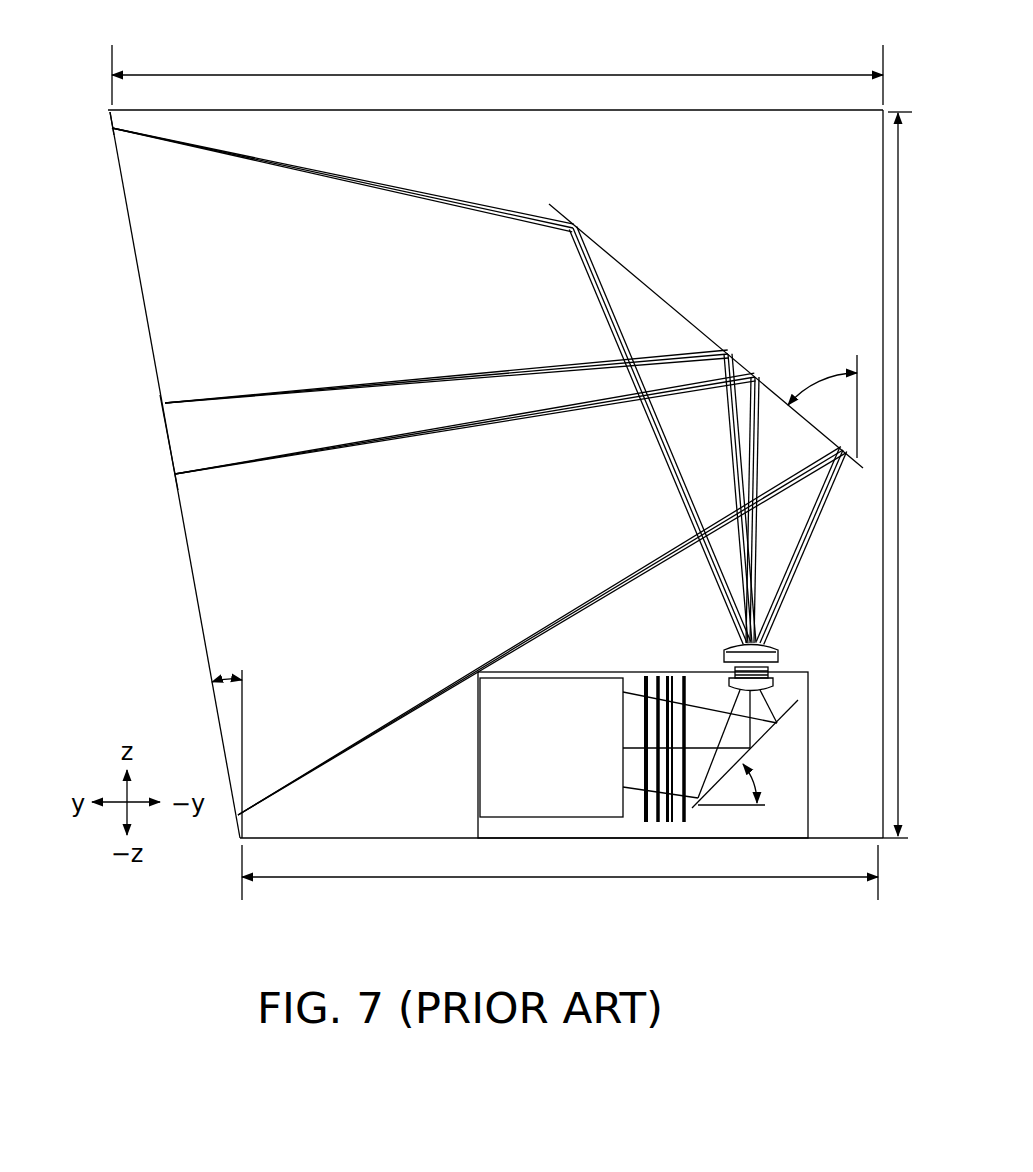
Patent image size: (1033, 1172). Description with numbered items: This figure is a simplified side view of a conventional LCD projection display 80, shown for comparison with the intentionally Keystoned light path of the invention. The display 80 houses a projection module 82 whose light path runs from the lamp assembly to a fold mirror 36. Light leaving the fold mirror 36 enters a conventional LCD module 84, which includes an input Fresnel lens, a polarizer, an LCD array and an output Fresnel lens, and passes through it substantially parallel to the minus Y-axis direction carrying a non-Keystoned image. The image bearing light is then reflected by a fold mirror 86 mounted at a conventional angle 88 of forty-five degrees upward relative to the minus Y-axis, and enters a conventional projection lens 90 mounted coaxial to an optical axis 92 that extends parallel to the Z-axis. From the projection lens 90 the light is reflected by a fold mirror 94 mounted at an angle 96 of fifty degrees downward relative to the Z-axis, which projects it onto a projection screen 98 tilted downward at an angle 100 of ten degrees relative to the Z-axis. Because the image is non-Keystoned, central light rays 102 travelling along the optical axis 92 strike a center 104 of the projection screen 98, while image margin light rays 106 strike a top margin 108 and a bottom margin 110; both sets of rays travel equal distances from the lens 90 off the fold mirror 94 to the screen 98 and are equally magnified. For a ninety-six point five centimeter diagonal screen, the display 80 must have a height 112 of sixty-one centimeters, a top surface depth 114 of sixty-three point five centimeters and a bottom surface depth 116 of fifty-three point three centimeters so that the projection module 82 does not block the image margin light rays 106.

The fold mirror 36 is at (500, 798).
The LCD projection display 80 is at (170, 905).
The projection module 82 is at (597, 672).
The LCD module 84 is at (640, 668).
The fold mirror 86 is at (770, 727).
The angle 88 is at (752, 787).
The projection lens 90 is at (780, 656).
The optical axis 92 is at (228, 467).
The fold mirror 94 is at (668, 303).
The angle 96 is at (796, 400).
The projection screen 98 is at (203, 633).
The angle 100 is at (230, 669).
The central light rays 102 is at (390, 442).
The center 104 is at (170, 478).
The image margin light rays 106 is at (458, 198).
The top margin 108 is at (110, 132).
The bottom margin 110 is at (234, 822).
The height 112 is at (898, 235).
The top surface depth 114 is at (465, 75).
The bottom surface depth 116 is at (757, 880).